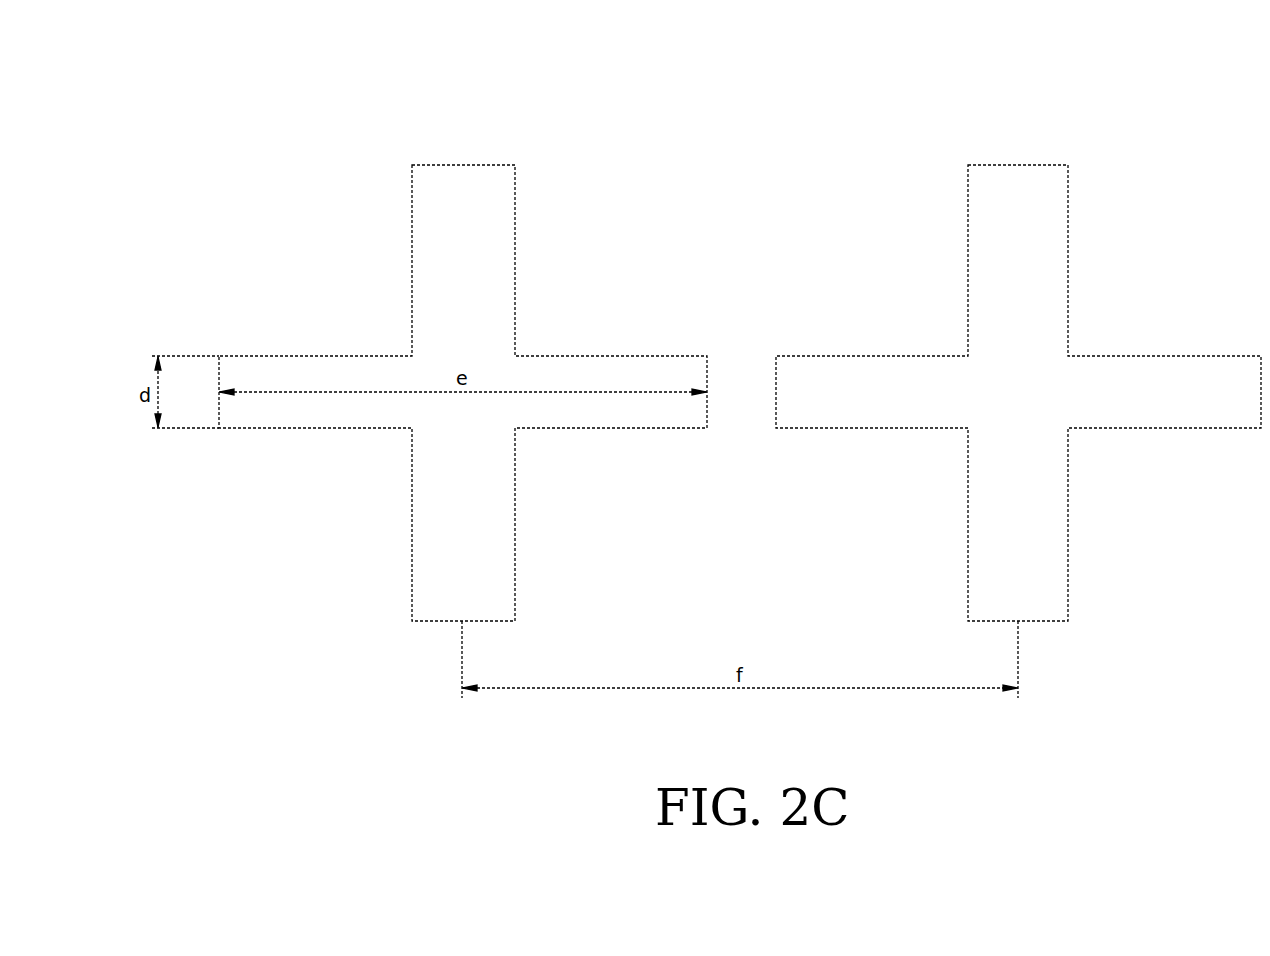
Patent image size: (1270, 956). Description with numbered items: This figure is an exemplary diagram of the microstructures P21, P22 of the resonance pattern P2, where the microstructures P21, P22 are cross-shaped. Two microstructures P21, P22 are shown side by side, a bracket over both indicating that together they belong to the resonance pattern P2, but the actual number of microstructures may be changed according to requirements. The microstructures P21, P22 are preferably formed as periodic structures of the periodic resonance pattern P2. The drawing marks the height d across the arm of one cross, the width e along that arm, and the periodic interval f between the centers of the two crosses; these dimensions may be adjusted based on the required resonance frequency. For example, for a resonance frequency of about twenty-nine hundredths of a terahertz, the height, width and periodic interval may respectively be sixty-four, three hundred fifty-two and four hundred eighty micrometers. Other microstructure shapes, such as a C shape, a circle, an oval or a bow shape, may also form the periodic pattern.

The resonance pattern P2 is at (1198, 88).
The microstructure P21 is at (410, 216).
The microstructure P22 is at (1070, 216).